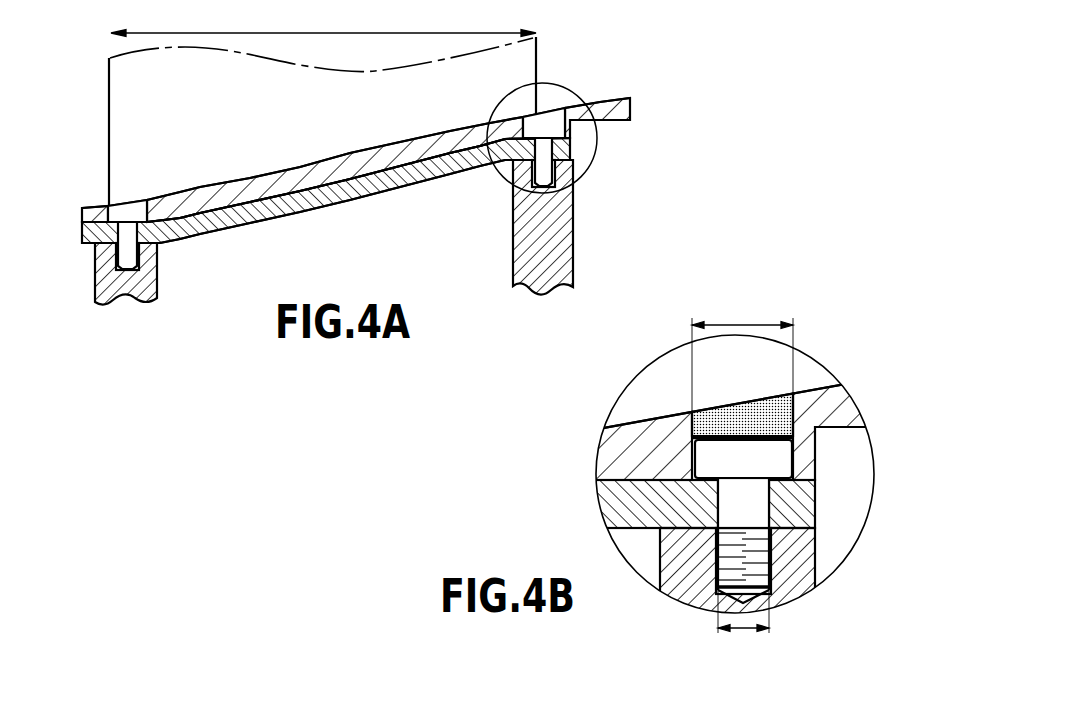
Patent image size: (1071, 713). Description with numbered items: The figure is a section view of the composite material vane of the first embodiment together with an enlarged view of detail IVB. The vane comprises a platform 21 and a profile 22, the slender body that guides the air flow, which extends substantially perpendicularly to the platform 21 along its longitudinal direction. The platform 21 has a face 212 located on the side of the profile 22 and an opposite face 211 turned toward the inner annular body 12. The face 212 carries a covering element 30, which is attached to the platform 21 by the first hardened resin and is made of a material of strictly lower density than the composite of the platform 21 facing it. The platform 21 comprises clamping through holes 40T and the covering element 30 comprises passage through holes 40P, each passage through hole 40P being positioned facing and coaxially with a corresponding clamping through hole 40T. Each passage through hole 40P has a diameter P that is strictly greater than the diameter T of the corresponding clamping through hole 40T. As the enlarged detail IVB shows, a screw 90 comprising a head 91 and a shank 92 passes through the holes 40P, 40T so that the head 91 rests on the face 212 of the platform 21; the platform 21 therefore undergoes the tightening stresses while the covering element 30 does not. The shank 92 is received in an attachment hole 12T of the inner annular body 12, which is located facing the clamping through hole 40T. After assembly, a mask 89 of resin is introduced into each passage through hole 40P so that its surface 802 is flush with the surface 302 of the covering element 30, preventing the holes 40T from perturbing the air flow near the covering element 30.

In FIG. 4A, the inner annular body 12 is at (125, 293).
In FIG. 4B, the inner annular body 12 is at (793, 583).
In FIG. 4A, the attachment holes 12T is at (97, 270).
In FIG. 4A, the platform 21 is at (307, 208).
In FIG. 4B, the platform 21 is at (627, 517).
In FIG. 4A, the lower surface of lower plate 211 is at (395, 183).
In FIG. 4A, the face of the platform 212 is at (378, 163).
In FIG. 4A, the profile 22 is at (541, 52).
In FIG. 4A, the covering element 30 is at (643, 108).
In FIG. 4B, the covering element 30 is at (610, 447).
In FIG. 4A, the surface of the covering element 302 is at (310, 165).
In FIG. 4B, the surface of the covering element 302 is at (817, 386).
In FIG. 4A, the passage through holes 40P is at (128, 208).
In FIG. 4A, the clamping through holes 40T is at (125, 233).
In FIG. 4B, the surface of the mask 802 is at (723, 404).
In FIG. 4B, the masks 89 is at (761, 416).
In FIG. 4B, the screw 90 is at (758, 549).
In FIG. 4B, the head 91 is at (765, 456).
In FIG. 4B, the shank 92 is at (703, 581).
In FIG. 4A, the detail IVB is at (581, 99).
In FIG. 4B, the diameter of the passage through hole P is at (742, 367).
In FIG. 4B, the diameter of the clamping through hole T is at (743, 623).